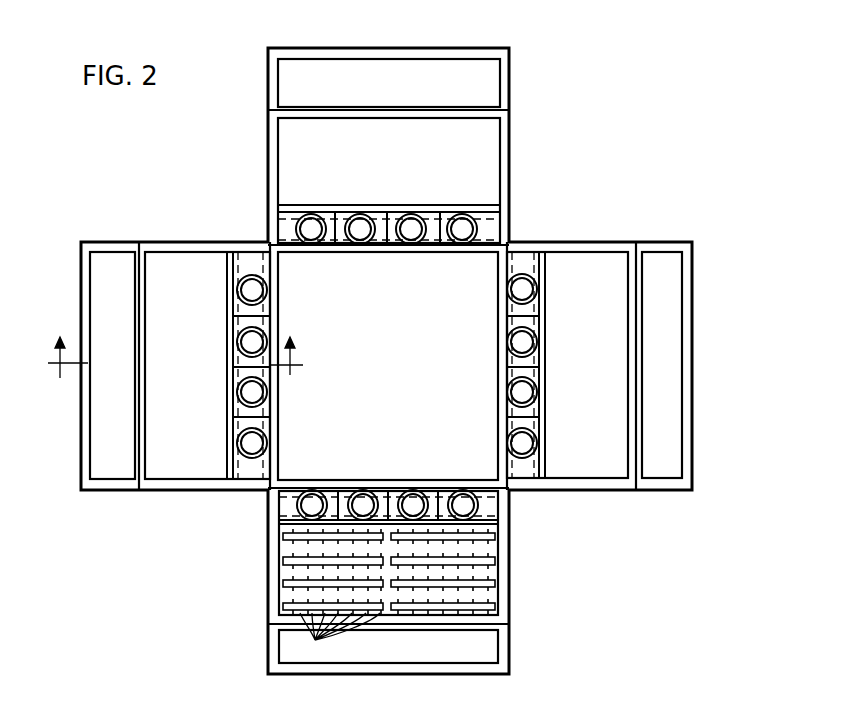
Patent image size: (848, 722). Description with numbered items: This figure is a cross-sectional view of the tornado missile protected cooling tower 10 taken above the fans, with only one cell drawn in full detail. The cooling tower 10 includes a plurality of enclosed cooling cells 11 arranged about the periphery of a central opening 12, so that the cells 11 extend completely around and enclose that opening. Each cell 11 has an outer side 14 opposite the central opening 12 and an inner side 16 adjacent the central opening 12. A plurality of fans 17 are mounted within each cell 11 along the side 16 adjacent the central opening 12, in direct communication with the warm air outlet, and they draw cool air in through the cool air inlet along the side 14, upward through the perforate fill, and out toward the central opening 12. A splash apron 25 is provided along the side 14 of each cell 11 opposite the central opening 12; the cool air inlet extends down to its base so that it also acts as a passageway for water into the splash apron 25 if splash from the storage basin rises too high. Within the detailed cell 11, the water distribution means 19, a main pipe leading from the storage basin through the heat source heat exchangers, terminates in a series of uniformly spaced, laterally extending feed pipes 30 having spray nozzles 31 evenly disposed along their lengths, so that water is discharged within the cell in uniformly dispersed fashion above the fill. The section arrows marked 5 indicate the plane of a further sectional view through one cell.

The tornado missile protected cooling tower 10 is at (597, 101).
The enclosed cooling cell 11 is at (509, 159).
The central opening 12 is at (386, 382).
The side opposite the central opening 14 is at (393, 108).
The side adjacent the central opening 16 is at (278, 297).
The fan 17 is at (318, 222).
The water distribution means 19 is at (390, 490).
The splash apron 25 is at (326, 72).
The feed pipe 30 is at (283, 561).
The spray nozzle 31 is at (338, 637).
The section line 5- 5 is at (175, 343).